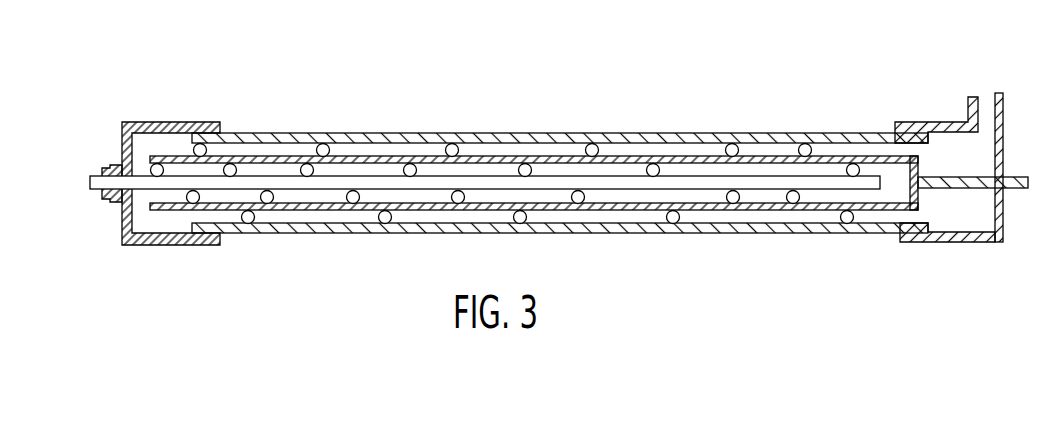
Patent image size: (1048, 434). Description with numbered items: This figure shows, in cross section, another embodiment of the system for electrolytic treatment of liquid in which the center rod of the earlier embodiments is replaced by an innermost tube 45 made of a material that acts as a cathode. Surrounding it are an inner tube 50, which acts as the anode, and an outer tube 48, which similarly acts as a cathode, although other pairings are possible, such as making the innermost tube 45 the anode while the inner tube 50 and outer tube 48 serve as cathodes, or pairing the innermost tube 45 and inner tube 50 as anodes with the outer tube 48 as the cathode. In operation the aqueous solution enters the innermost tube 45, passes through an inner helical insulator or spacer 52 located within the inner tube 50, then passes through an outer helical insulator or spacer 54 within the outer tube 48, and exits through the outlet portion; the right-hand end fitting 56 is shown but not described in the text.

The innermost tube 45 is at (255, 183).
The outer tube 48 is at (423, 135).
The inner tube 50 is at (495, 157).
The inner helical insulator or spacer 52 is at (593, 211).
The outer helical insulator or spacer 54 is at (676, 223).
The end fitting 56 is at (987, 105).